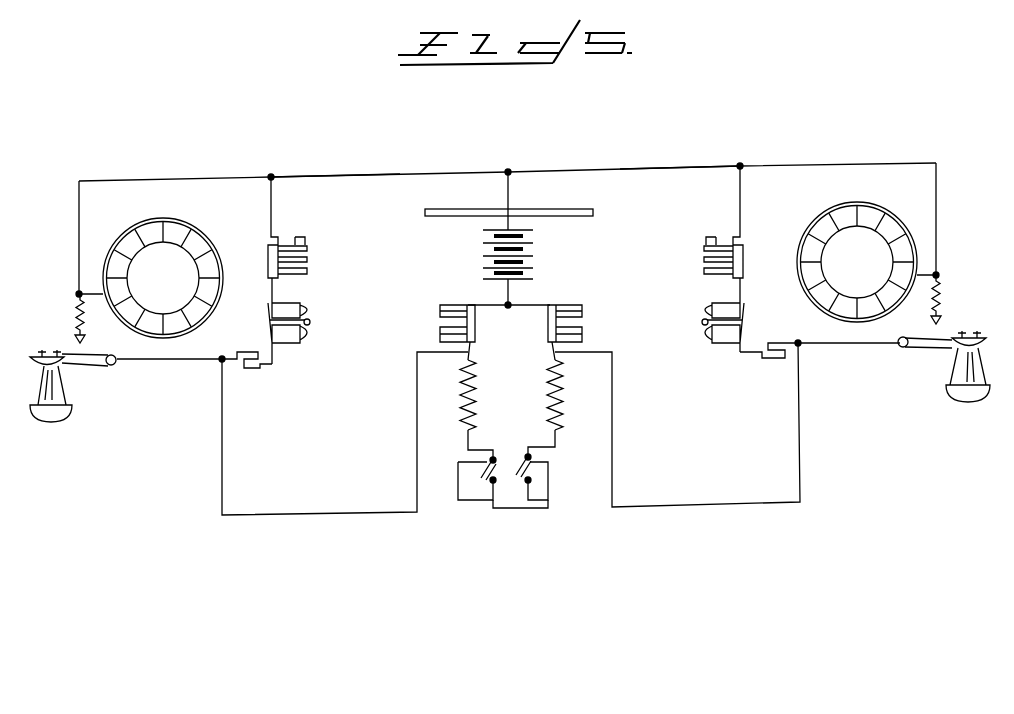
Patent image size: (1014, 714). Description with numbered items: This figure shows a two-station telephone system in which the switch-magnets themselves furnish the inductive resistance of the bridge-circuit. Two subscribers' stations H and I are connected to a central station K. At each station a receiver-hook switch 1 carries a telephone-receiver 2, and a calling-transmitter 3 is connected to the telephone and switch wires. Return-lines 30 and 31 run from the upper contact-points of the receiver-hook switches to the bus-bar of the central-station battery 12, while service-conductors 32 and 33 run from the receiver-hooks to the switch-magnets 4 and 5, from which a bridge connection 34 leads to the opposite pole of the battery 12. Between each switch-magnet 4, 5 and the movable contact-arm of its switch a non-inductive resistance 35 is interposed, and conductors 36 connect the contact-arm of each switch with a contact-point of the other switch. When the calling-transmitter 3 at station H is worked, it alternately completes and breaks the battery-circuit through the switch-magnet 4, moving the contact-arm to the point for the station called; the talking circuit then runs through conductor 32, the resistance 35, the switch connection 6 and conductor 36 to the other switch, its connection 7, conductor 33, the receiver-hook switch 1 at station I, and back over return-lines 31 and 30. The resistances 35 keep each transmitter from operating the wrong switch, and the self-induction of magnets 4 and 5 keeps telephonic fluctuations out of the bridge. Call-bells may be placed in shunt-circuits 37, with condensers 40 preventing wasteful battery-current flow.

The subscriber's station H is at (60, 287).
The subscriber's station I is at (975, 266).
The central station K is at (615, 266).
The receiver-hook switch 1 is at (507, 354).
The telephone-receiver 2 is at (515, 376).
The calling-transmitter 3 is at (155, 280).
The switch-magnet 4 is at (457, 310).
The switch-magnet 5 is at (575, 318).
The switch connection 6 is at (477, 465).
The switch connection 7 is at (535, 465).
The central-station battery 12 is at (490, 238).
The return-line 30 is at (327, 178).
The return-line 31 is at (700, 164).
The service-conductor 32 is at (282, 497).
The service-conductor 33 is at (697, 482).
The bridge connection 34 is at (516, 293).
The non-inductive resistance 35 is at (420, 410).
The conductor 36 is at (506, 530).
The shunt-circuit 37 is at (272, 215).
The condenser 40 is at (510, 368).